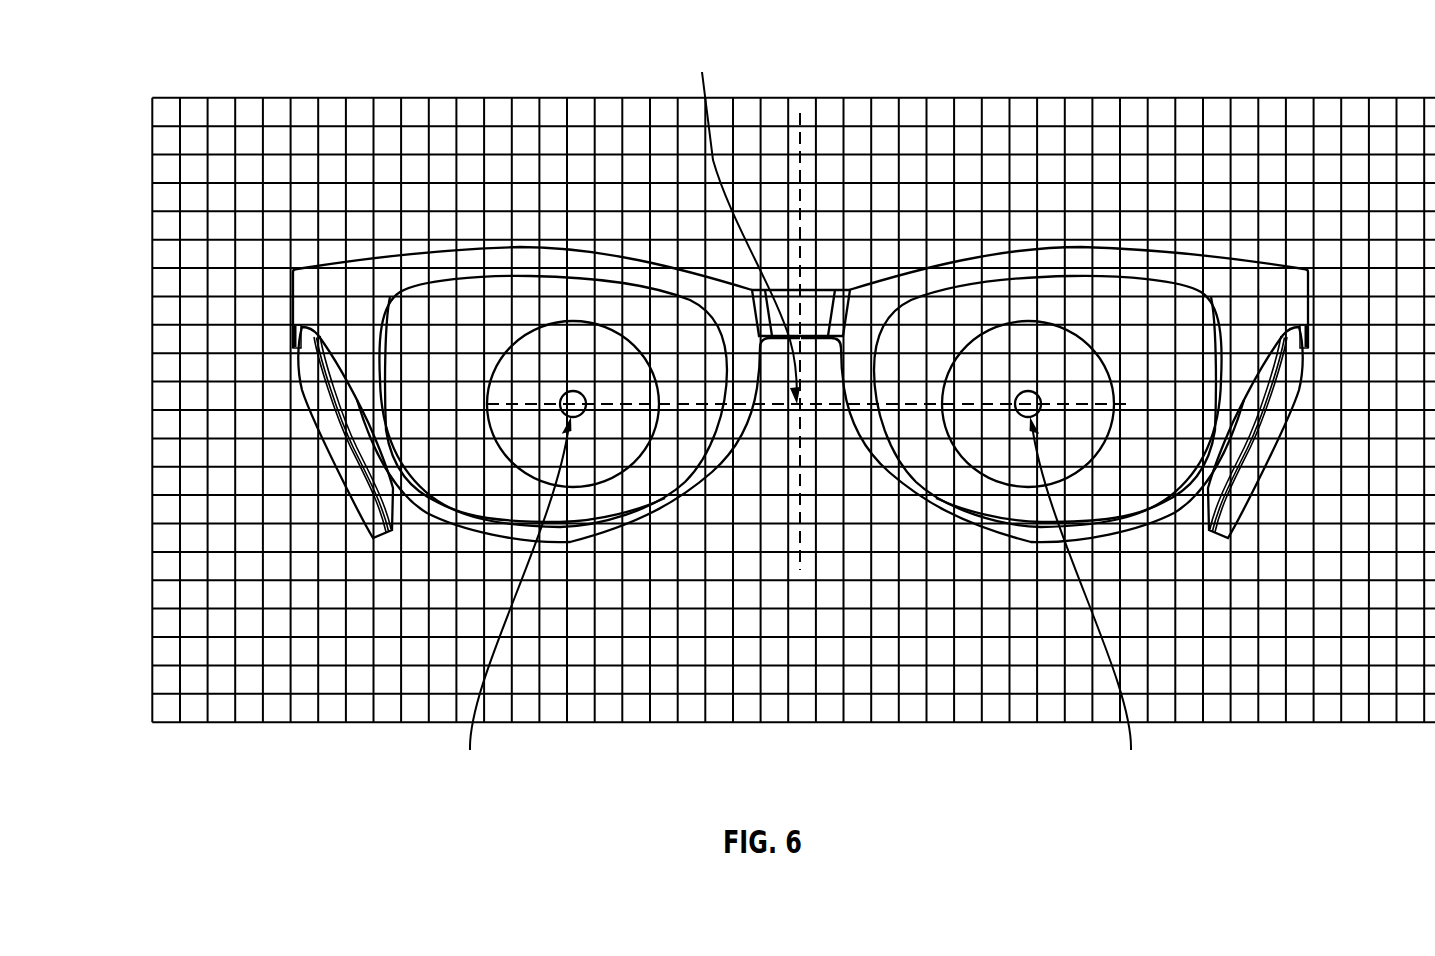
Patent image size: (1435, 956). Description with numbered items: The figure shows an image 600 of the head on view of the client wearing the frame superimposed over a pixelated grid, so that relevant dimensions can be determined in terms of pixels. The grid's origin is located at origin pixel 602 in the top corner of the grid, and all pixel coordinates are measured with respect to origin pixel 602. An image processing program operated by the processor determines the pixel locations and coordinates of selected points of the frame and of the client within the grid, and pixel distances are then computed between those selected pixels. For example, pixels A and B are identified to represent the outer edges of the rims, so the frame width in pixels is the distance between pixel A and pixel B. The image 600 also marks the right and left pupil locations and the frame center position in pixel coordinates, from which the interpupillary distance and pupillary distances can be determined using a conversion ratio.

The image 600 is at (831, 405).
The origin pixel 602 is at (157, 108).
The pixel A is at (328, 403).
The pixel B is at (1273, 403).